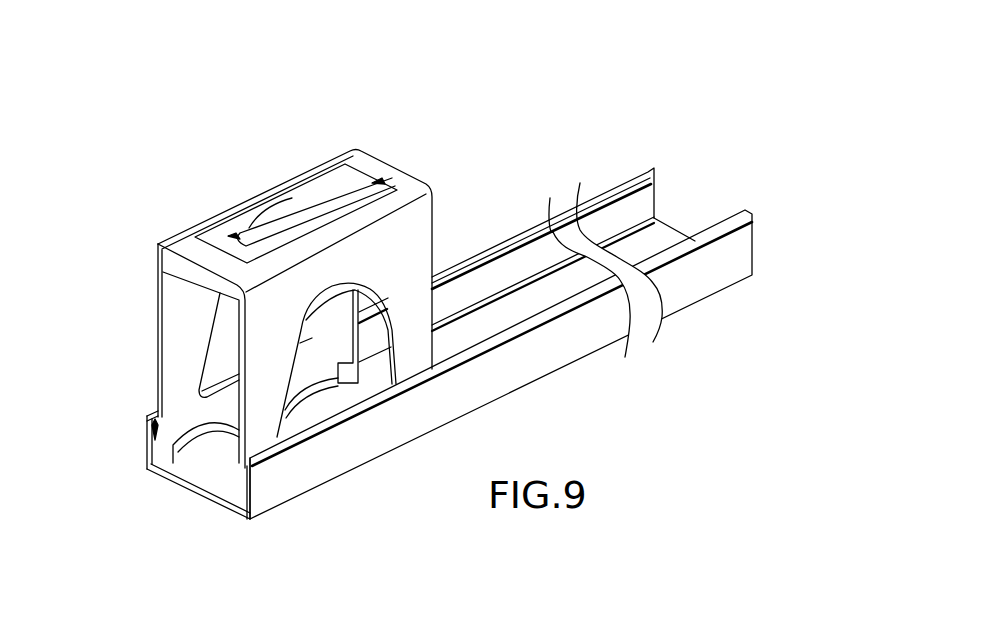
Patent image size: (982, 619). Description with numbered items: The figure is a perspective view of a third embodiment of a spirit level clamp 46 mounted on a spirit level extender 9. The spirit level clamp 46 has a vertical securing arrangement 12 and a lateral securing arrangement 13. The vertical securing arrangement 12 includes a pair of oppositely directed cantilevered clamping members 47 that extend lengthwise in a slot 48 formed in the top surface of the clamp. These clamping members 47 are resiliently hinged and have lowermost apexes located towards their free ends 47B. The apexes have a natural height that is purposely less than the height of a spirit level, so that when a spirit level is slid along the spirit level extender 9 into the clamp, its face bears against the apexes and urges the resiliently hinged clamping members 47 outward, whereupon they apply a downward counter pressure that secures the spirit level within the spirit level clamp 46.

The spirit level extender 9 is at (717, 270).
The vertical securing arrangement 12 is at (407, 118).
The lateral securing arrangement 13 is at (173, 504).
The spirit level clamp 46 is at (556, 86).
The cantilevered clamping members 47 is at (259, 245).
The free ends 47B is at (232, 236).
The slot 48 is at (217, 233).